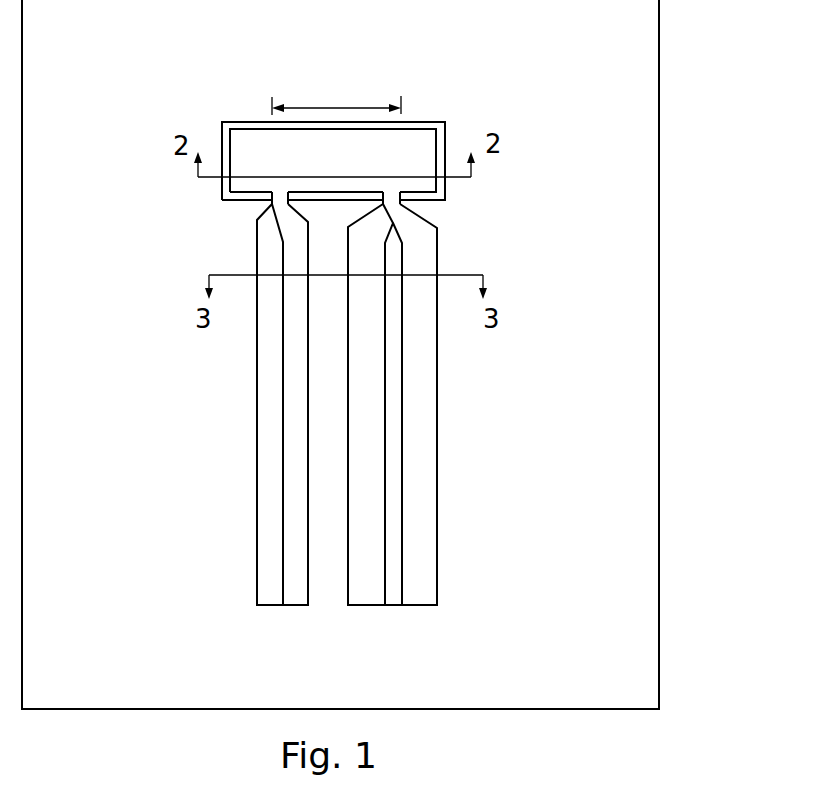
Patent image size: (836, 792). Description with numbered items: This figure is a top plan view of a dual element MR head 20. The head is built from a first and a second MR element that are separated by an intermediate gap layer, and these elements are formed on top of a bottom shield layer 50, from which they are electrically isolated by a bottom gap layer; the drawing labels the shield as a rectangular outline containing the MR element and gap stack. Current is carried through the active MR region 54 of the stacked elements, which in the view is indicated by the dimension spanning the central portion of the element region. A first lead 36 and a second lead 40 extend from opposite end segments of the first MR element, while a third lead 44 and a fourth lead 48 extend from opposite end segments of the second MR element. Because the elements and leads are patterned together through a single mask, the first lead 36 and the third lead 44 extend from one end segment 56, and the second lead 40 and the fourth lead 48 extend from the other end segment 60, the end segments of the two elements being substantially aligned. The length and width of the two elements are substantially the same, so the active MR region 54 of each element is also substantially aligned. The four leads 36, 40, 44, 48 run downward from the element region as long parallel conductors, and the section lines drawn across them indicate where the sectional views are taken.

The dual element MR head 20 is at (690, 46).
The bottom shield layer 50 is at (446, 142).
The active MR region 54 is at (323, 103).
The end segment 56 is at (403, 206).
The end segment 60 is at (275, 206).
The second lead 40 is at (272, 607).
The fourth lead 48 is at (297, 607).
The first lead 36 is at (368, 607).
The third lead 44 is at (422, 607).